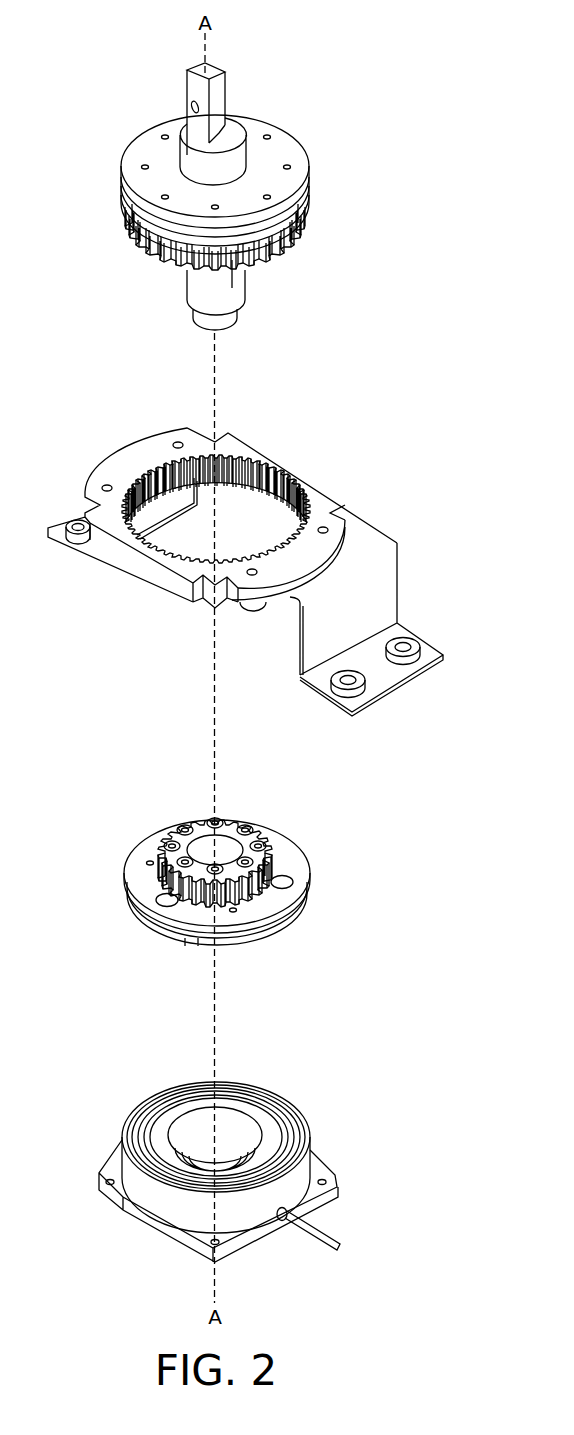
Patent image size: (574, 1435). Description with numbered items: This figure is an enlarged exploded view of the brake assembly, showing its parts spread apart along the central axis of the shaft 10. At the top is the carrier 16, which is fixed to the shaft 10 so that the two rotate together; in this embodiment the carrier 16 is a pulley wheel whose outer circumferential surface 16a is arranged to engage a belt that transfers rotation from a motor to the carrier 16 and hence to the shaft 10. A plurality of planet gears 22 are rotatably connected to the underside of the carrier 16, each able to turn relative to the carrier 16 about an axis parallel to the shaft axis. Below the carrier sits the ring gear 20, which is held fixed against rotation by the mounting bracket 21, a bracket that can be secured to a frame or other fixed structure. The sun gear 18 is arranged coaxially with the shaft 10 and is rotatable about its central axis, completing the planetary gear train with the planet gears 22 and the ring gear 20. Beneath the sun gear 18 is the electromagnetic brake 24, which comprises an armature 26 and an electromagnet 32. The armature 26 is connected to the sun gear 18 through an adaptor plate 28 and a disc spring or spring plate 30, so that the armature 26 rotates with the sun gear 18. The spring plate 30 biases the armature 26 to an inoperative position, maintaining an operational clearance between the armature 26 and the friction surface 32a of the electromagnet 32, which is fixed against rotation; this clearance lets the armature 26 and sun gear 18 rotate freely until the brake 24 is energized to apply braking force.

The shaft 10 is at (187, 88).
The carrier 16 is at (283, 145).
The outer circumferential surface 16a is at (310, 188).
The planet gears 22 is at (310, 230).
The ring gear 20 is at (313, 492).
The mounting bracket 21 is at (383, 588).
The sun gear 18 is at (260, 832).
The adaptor plate 28 is at (297, 865).
The disc spring or spring plate 30 is at (307, 902).
The armature 26 is at (241, 879).
The electromagnetic brake 24 is at (258, 1024).
The electromagnet 32 is at (229, 1161).
The friction surface 32a is at (152, 1100).